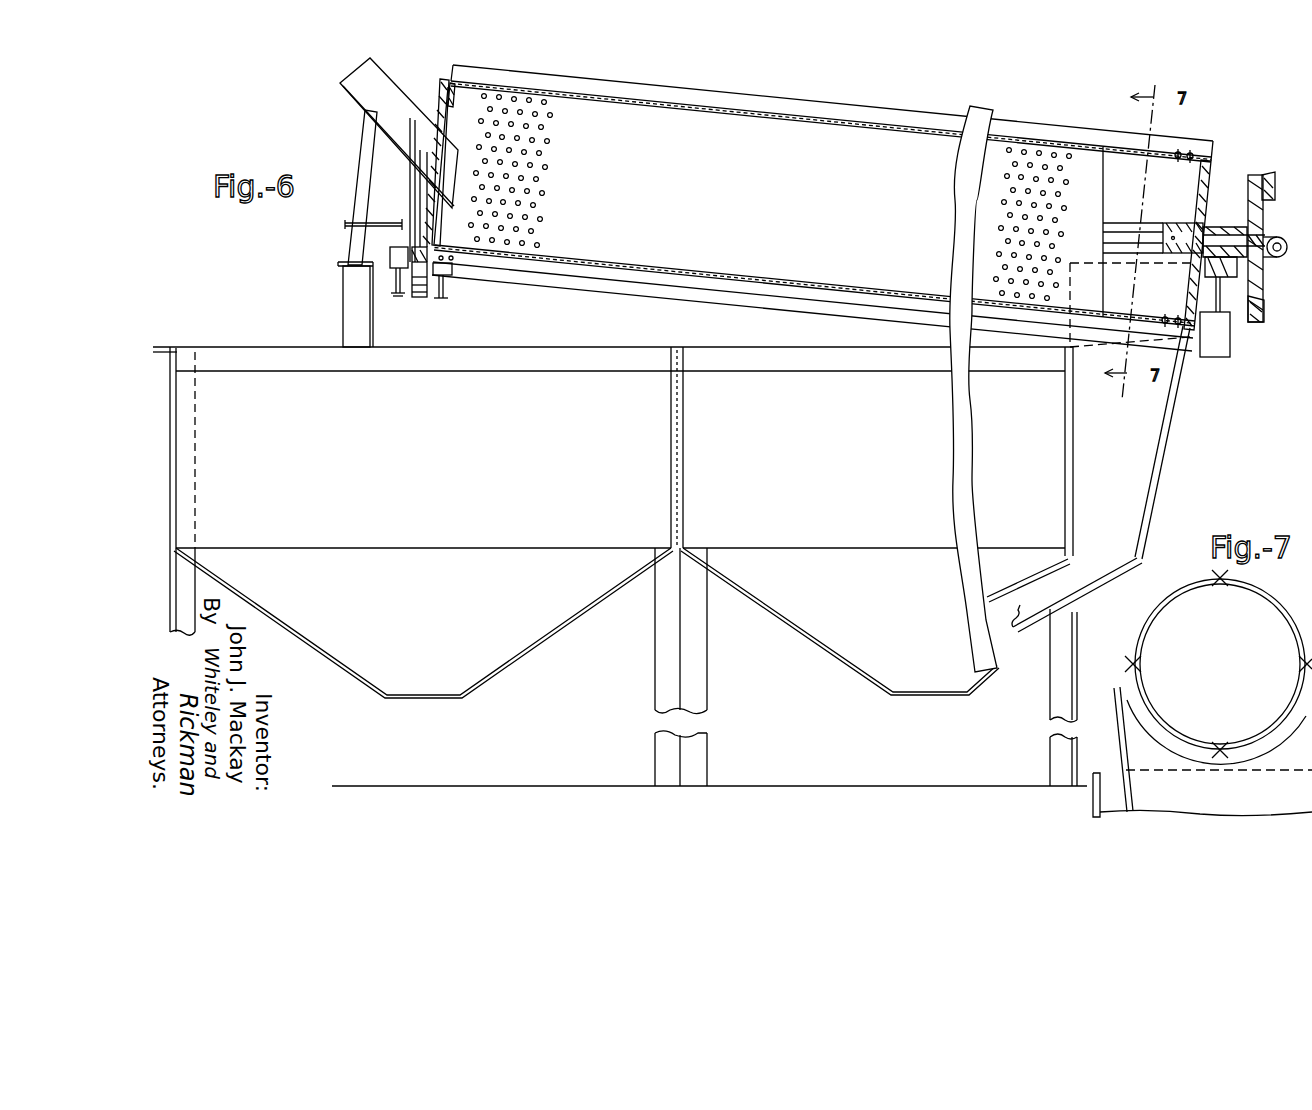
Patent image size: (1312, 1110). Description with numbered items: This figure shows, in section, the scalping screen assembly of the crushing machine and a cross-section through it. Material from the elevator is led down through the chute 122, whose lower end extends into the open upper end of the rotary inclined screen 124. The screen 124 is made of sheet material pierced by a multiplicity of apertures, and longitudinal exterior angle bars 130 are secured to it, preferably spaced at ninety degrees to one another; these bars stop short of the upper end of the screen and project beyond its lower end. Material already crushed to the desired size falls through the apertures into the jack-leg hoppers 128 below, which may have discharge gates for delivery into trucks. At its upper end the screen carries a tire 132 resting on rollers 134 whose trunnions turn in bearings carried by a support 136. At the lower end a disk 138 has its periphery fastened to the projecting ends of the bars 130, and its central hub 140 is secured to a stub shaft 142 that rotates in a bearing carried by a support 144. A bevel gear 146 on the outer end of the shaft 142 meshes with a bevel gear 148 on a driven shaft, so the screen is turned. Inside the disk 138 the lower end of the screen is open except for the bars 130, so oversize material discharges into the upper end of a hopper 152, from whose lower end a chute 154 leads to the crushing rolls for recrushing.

In FIG. 6, the chute 122 is at (375, 107).
In FIG. 6, the rotary inclined screen 124 is at (822, 122).
In FIG. 7, the rotary inclined screen 124 is at (1280, 590).
In FIG. 6, the jack-leg hoppers 128 is at (760, 577).
In FIG. 7, the jack-leg hoppers 128 is at (1093, 804).
In FIG. 6, the angle bars 130 is at (665, 283).
In FIG. 7, the angle bars 130 is at (1122, 652).
In FIG. 6, the tire 132 is at (441, 78).
In FIG. 6, the rollers 134 is at (420, 297).
In FIG. 6, the support 136 is at (400, 297).
In FIG. 6, the disk 138 is at (1205, 180).
In FIG. 6, the central hub 140 is at (1175, 223).
In FIG. 6, the stub shaft 142 is at (1223, 243).
In FIG. 6, the support 144 is at (1213, 313).
In FIG. 6, the bevel gear 146 is at (1262, 190).
In FIG. 6, the bevel gear 148 is at (1275, 240).
In FIG. 6, the hopper 152 is at (1158, 492).
In FIG. 7, the hopper 152 is at (1138, 748).
In FIG. 6, the chute 154 is at (1045, 597).